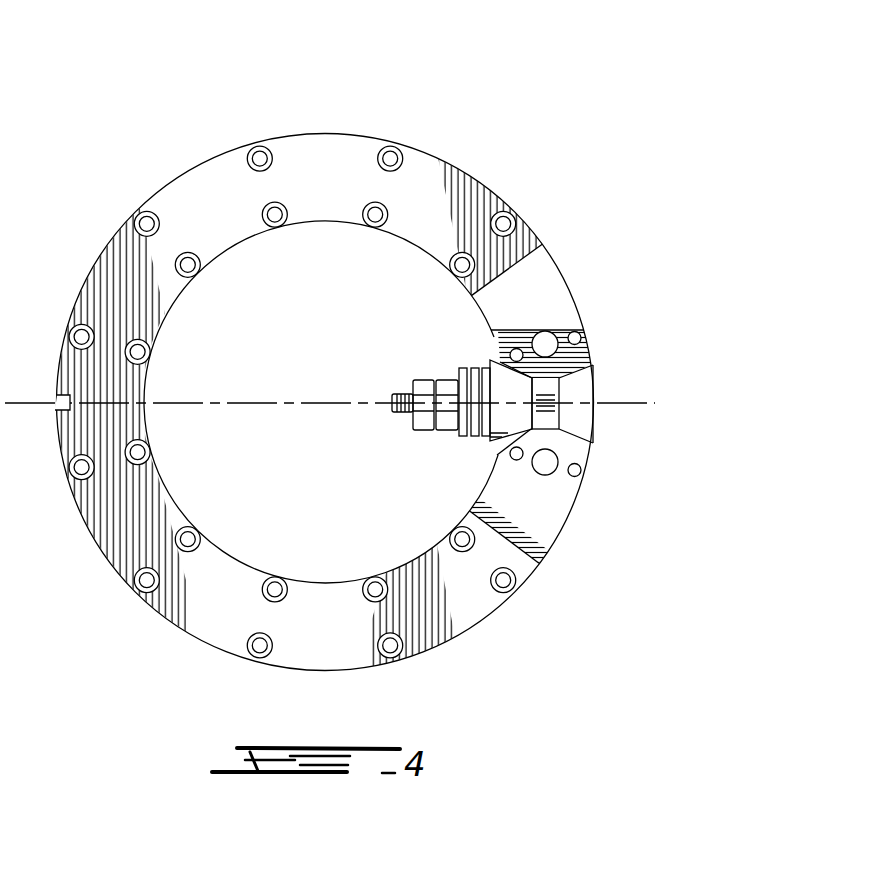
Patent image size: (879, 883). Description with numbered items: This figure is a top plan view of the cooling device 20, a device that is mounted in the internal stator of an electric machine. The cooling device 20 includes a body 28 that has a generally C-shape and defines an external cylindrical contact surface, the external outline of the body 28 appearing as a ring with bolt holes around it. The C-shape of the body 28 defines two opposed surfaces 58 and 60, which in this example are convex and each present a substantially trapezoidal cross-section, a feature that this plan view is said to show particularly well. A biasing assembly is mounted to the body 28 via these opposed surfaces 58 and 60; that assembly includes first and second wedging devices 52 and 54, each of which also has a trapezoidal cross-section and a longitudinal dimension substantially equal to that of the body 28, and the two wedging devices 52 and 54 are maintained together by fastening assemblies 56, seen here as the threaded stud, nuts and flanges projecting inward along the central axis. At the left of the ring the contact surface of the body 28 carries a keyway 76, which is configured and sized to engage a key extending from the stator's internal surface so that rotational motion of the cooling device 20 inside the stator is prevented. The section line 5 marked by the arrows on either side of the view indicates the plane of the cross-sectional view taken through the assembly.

The cooling device 20 is at (506, 111).
The body 28 is at (540, 293).
The first wedging device 52 is at (588, 415).
The second wedging device 54 is at (511, 433).
The fastening assemblies 56 is at (403, 392).
The first opposed surface 58 is at (591, 441).
The second opposed surface 60 is at (591, 360).
The keyway 76 is at (60, 410).
The section line 5- 5 is at (22, 346).